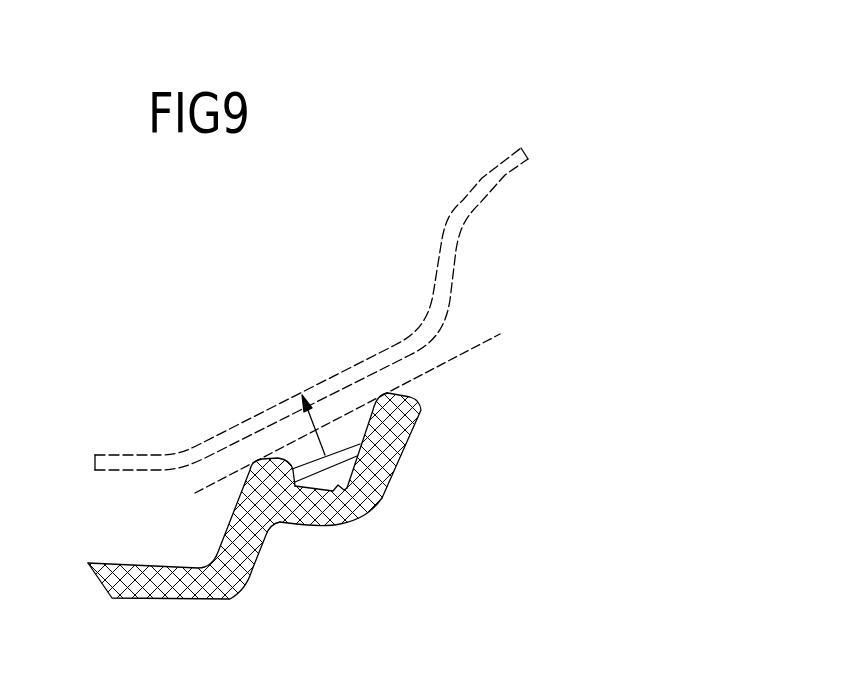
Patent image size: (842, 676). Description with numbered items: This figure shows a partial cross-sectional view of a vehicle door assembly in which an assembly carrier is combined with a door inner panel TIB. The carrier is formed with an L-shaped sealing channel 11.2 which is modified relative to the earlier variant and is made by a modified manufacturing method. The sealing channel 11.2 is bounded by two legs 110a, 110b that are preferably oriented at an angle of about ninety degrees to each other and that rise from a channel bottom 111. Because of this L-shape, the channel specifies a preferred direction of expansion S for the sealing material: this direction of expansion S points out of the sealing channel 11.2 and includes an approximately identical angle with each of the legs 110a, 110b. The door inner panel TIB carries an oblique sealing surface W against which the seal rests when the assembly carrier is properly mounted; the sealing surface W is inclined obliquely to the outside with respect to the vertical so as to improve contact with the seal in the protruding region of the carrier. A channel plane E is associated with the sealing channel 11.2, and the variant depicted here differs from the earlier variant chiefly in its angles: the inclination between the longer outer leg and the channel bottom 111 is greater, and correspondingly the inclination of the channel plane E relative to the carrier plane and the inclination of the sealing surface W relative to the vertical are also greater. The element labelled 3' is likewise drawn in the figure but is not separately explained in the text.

The door inner panel TIB is at (492, 160).
The sealing surface W is at (203, 437).
The direction of expansion S is at (355, 441).
The insert strip 3' is at (326, 384).
The channel plane E is at (358, 407).
The leg 110a is at (270, 465).
The leg 110b is at (397, 422).
The channel bottom 111 is at (350, 493).
The sealing channel 11.2 is at (325, 505).